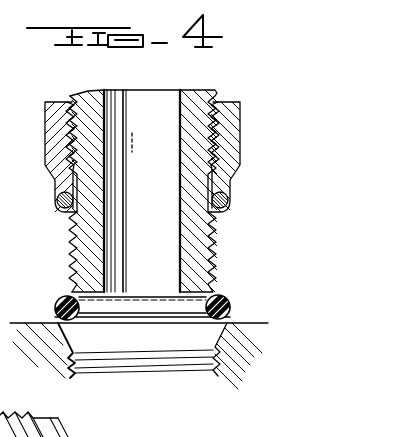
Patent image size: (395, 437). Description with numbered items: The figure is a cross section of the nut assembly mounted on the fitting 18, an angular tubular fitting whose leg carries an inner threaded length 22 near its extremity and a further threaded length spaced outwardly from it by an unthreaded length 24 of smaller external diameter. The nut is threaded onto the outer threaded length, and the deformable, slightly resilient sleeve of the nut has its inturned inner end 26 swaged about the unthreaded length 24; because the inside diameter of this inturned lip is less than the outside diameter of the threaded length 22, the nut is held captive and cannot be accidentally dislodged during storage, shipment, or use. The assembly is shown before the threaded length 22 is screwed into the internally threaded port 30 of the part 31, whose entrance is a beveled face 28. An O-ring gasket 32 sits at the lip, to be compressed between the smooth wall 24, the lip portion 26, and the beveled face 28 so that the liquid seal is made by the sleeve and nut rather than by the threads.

The fitting 18 is at (88, 102).
The inner threaded length 22 is at (68, 247).
The unthreaded length 24 is at (55, 193).
The inturned inner end 26 is at (67, 207).
The beveled entrance 28 is at (230, 318).
The internally threaded port 30 is at (212, 367).
The part 31 is at (247, 343).
The O-ring gasket 32 is at (227, 301).